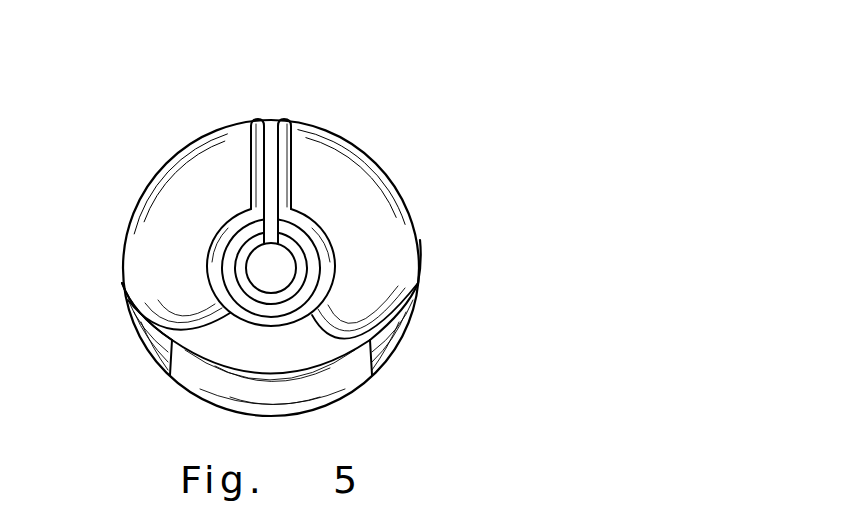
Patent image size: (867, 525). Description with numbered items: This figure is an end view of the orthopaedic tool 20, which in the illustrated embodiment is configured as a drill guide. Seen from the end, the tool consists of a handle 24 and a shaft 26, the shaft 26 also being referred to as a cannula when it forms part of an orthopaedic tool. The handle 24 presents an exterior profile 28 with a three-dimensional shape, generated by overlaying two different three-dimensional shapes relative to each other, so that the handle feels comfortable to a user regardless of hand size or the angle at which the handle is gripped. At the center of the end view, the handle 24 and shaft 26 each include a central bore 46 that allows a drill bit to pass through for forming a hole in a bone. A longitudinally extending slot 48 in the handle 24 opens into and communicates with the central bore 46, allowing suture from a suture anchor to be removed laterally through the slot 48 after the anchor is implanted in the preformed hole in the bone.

The orthopaedic tool 20 is at (382, 113).
The handle 24 is at (115, 325).
The shaft 26 is at (297, 255).
The exterior profile 28 is at (422, 255).
The central bore 46 is at (270, 267).
The slot 48 is at (262, 156).